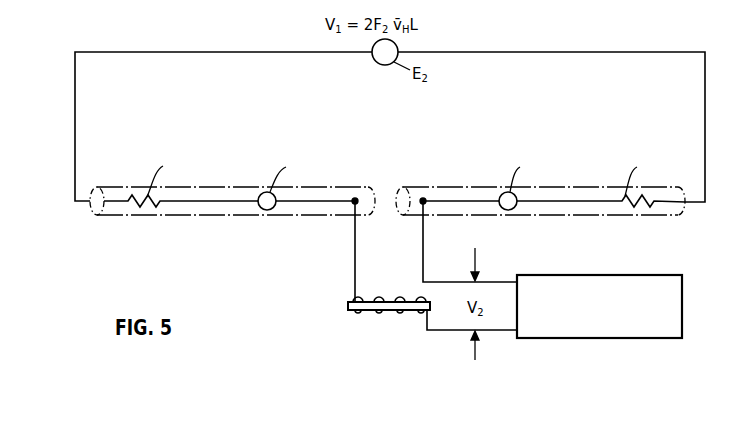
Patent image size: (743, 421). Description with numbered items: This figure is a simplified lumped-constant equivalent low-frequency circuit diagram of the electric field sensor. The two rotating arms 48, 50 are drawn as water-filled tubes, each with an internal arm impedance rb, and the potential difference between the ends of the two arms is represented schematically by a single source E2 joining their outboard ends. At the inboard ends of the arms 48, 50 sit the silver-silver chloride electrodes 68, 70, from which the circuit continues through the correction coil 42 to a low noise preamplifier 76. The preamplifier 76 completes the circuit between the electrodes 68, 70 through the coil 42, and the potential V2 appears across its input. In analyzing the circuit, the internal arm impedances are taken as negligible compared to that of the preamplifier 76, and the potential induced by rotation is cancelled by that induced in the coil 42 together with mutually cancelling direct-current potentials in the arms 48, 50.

The correction coil 42 is at (394, 313).
The arm 48 is at (215, 218).
The arm 50 is at (548, 218).
The silver-silver chloride electrode 68 is at (355, 196).
The silver-silver chloride electrode 70 is at (423, 196).
The low noise preamplifier 76 is at (684, 297).